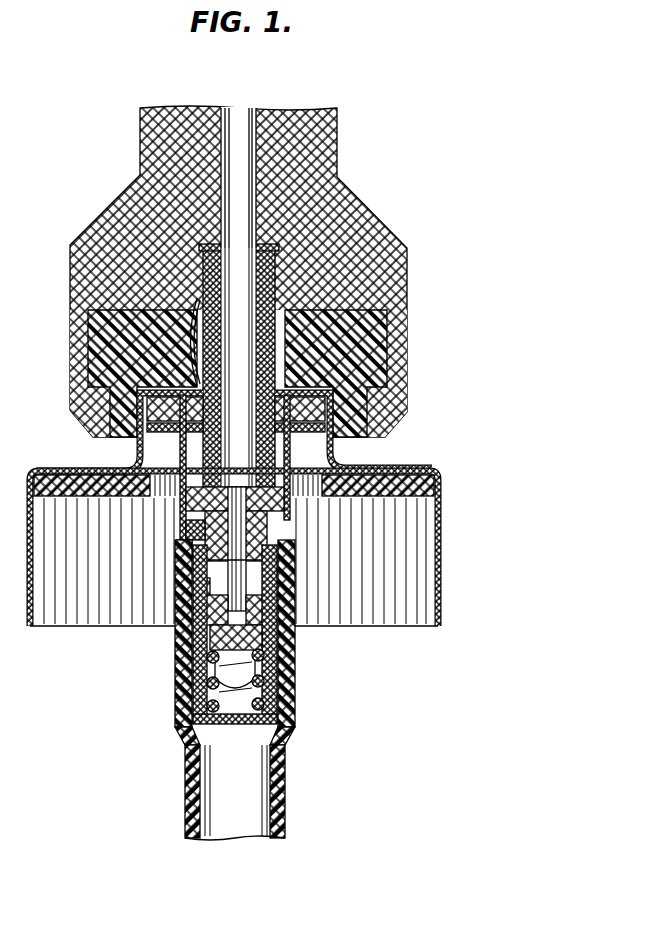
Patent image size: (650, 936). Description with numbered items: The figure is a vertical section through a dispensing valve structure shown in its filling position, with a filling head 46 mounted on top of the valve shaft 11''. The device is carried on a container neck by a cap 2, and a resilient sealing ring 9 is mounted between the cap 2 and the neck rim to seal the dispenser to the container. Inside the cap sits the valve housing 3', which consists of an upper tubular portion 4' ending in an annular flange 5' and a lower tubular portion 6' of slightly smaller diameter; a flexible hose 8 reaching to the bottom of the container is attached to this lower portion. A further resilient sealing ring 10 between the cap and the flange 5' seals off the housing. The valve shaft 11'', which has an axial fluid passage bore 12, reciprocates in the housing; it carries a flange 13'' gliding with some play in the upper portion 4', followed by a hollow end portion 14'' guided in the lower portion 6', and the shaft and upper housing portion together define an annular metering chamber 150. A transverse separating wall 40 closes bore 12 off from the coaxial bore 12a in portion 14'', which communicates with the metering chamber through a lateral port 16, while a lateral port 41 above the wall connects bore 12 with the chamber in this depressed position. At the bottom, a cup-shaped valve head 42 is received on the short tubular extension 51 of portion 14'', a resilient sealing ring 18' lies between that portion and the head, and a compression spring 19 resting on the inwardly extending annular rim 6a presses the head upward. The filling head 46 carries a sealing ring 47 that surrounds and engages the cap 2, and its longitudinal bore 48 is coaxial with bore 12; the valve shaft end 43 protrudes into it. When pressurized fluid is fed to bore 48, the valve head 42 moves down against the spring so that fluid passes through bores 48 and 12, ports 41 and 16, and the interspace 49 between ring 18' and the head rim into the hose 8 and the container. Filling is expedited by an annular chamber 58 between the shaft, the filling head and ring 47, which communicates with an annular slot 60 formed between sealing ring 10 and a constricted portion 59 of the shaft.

The longitudinal bore 48 is at (252, 112).
The filling head 46 is at (318, 137).
The valve shaft end 43 is at (270, 250).
The annular chamber 58 is at (191, 308).
The valve shaft 11'' is at (267, 367).
The sealing ring 47 is at (92, 323).
The resilient sealing ring 10 is at (158, 390).
The axial fluid passage bore 12 is at (283, 352).
The annular slot 60 is at (226, 404).
The annular flange 5' is at (393, 373).
The constricted portion 59 is at (262, 406).
The lateral port 41 is at (126, 461).
The annular metering chamber 150 is at (305, 463).
The resilient sealing ring 9 is at (436, 478).
The flange 13'' is at (224, 459).
The transverse separating wall 40 is at (291, 505).
The lateral port 16 is at (183, 531).
The upper tubular portion 4' is at (256, 549).
The cap 2 is at (440, 556).
The hollow end portion 14'' is at (162, 555).
The resilient sealing ring 18' is at (303, 580).
The interspace 49 is at (192, 590).
The short tubular extension 51 is at (193, 612).
The coaxial bore 12a is at (290, 612).
The lower tubular portion 6' is at (203, 633).
The valve head 42 is at (292, 648).
The valve housing 3' is at (212, 633).
The compression spring 19 is at (186, 718).
The inwardly extending annular rim 6a is at (288, 745).
The flexible hose 8 is at (186, 792).